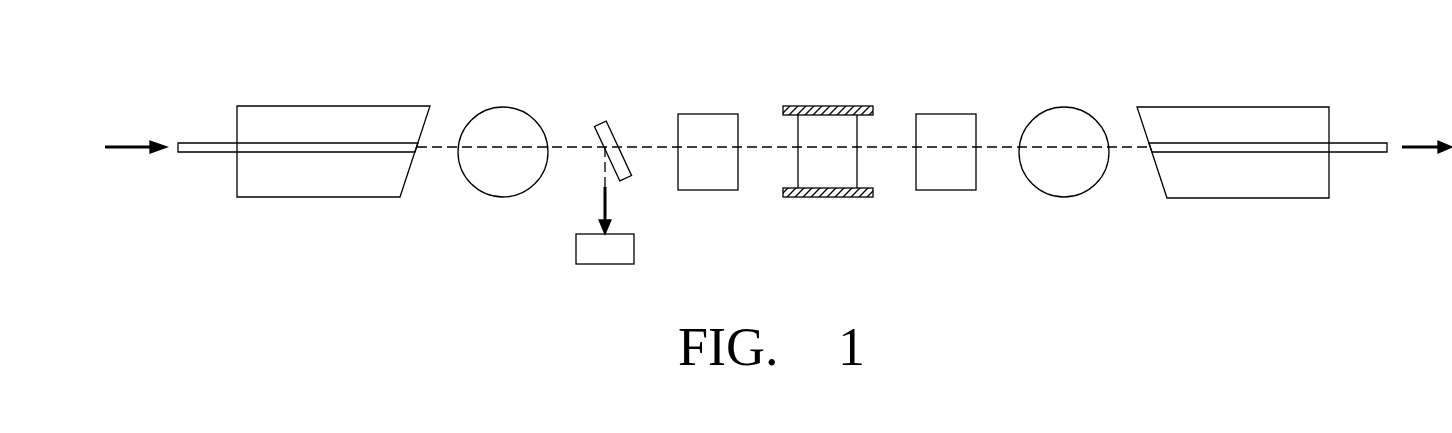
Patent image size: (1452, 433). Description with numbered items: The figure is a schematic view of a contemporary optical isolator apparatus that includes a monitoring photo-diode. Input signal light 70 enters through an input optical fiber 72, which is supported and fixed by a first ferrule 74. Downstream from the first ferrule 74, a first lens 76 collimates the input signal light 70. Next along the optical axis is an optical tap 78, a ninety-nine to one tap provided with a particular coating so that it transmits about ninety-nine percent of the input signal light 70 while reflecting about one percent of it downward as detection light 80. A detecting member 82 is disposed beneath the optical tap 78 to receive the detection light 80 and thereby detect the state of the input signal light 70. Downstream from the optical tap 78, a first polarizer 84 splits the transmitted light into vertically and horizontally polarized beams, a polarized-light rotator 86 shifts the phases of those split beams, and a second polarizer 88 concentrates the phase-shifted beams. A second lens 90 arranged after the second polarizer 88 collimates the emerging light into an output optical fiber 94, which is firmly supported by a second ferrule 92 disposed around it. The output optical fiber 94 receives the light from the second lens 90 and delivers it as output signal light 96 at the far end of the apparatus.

The input signal light 70 is at (123, 145).
The input optical fiber 72 is at (205, 142).
The first ferrule 74 is at (325, 106).
The first lens 76 is at (501, 107).
The optical tap 78 is at (602, 120).
The detection light 80 is at (603, 208).
The detecting member 82 is at (634, 247).
The first polarizer 84 is at (704, 114).
The polarized-light rotator 86 is at (826, 107).
The second polarizer 88 is at (945, 114).
The second lens 90 is at (1063, 107).
The second ferrule 92 is at (1237, 107).
The output optical fiber 94 is at (1353, 142).
The output signal light 96 is at (1420, 145).